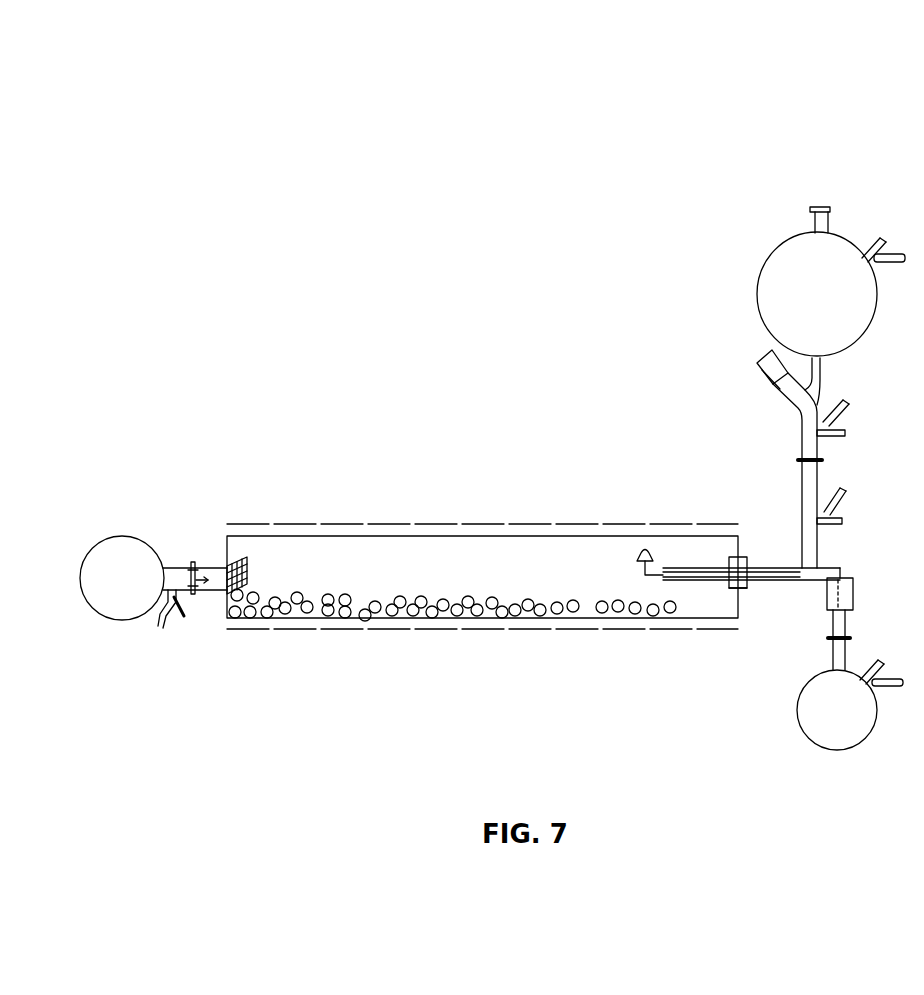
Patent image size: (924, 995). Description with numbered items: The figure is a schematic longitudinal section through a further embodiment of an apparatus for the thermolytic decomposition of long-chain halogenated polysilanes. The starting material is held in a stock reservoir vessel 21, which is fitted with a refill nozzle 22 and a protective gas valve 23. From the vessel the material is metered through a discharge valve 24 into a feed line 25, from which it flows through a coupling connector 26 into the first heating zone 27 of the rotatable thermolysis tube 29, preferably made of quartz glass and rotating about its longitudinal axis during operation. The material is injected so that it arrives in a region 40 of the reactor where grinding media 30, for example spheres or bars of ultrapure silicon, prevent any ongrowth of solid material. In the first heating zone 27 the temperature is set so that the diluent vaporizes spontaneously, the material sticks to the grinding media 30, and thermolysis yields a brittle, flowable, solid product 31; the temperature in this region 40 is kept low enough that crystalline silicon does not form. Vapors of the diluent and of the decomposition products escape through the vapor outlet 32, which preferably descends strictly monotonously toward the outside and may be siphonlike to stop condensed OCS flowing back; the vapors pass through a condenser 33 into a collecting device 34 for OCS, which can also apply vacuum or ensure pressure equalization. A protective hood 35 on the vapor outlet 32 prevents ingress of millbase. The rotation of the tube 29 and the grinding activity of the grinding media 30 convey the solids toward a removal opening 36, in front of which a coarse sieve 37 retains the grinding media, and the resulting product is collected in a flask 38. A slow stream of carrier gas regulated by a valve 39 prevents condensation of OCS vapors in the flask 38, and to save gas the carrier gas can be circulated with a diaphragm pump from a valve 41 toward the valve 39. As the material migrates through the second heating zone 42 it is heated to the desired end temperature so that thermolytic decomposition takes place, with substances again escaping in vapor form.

The stock reservoir vessel 21 is at (783, 235).
The refill nozzle 22 is at (816, 206).
The protective gas valve 23 is at (877, 236).
The discharge valve 24 is at (758, 353).
The feed line 25 is at (790, 587).
The coupling connector 26 is at (741, 580).
The first heating zone 27 is at (593, 585).
The rotatable thermolysis tube 29 is at (735, 588).
The grinding media 30 is at (633, 613).
The solid product 31 is at (563, 615).
The vapor outlet 32 is at (634, 615).
The condenser 33 is at (826, 592).
The collecting device 34 is at (812, 747).
The protective hood 35 is at (640, 548).
The removal opening 36 is at (193, 594).
The coarse sieve 37 is at (226, 592).
The flask 38 is at (117, 540).
The valve 39 is at (170, 614).
The region 40 is at (568, 611).
The valve 41 is at (887, 688).
The second heating zone 42 is at (322, 628).